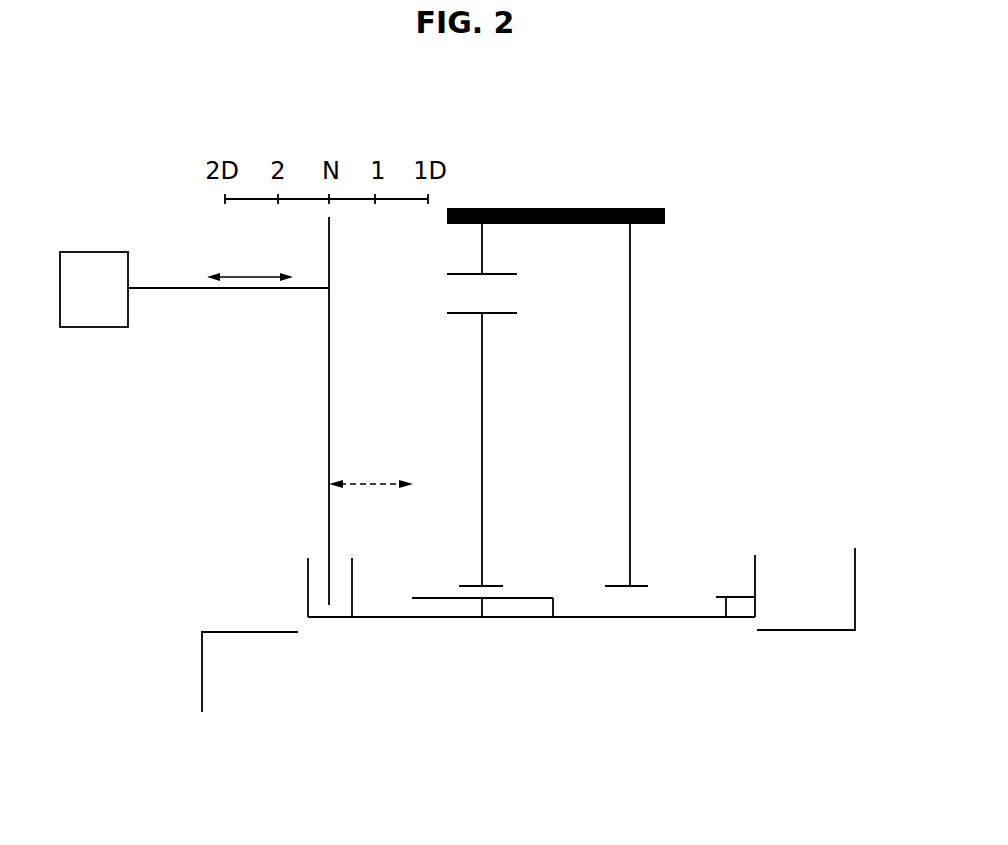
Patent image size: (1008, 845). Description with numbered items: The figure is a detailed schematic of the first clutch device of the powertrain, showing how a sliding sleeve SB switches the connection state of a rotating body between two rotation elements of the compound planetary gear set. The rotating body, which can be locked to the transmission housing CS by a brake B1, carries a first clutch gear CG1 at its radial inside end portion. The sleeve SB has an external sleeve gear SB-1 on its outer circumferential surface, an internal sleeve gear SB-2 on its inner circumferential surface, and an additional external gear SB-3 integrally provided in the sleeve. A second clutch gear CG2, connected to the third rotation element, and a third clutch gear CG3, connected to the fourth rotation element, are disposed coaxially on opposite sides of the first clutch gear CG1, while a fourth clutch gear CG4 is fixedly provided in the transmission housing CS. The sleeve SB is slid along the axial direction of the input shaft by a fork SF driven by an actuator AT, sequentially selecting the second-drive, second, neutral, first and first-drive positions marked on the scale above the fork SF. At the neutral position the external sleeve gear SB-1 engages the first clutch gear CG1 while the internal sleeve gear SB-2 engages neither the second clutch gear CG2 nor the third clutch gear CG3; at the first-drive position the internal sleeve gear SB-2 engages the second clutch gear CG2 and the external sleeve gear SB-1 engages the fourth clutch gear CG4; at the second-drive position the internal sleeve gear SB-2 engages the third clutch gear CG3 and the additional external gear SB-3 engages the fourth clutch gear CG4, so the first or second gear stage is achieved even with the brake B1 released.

The actuator AT is at (93, 252).
The fork SF is at (329, 374).
The transmission housing CS is at (603, 208).
The brake B1 is at (528, 294).
The first clutch gear CG1 is at (497, 584).
The second clutch gear CG2 is at (803, 628).
The third clutch gear CG3 is at (222, 630).
The fourth clutch gear CG4 is at (641, 584).
The sleeve SB is at (707, 700).
The external sleeve gear SB-1 is at (543, 617).
The internal sleeve gear SB-2 is at (493, 617).
The additional external gear SB-3 is at (725, 617).